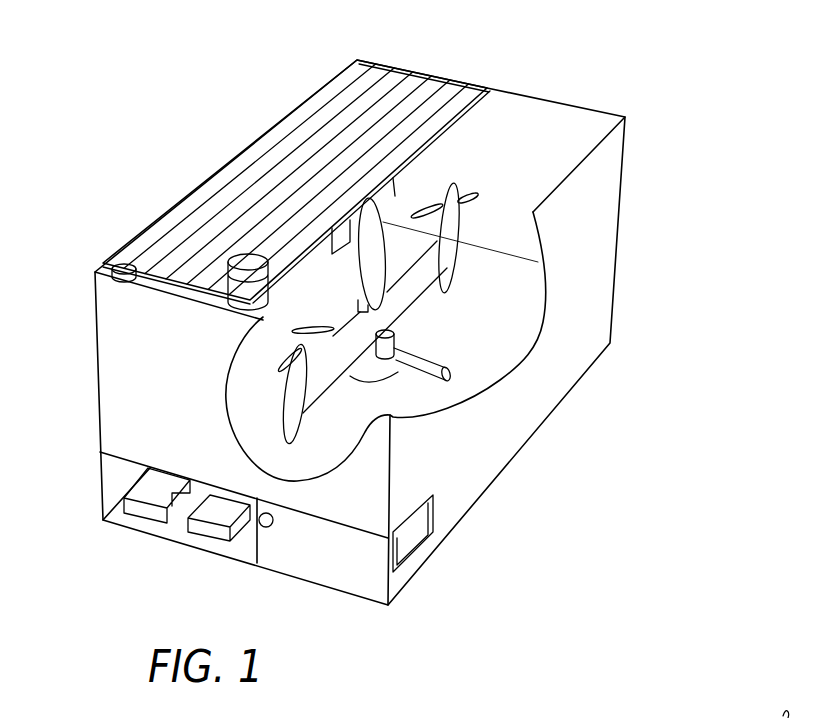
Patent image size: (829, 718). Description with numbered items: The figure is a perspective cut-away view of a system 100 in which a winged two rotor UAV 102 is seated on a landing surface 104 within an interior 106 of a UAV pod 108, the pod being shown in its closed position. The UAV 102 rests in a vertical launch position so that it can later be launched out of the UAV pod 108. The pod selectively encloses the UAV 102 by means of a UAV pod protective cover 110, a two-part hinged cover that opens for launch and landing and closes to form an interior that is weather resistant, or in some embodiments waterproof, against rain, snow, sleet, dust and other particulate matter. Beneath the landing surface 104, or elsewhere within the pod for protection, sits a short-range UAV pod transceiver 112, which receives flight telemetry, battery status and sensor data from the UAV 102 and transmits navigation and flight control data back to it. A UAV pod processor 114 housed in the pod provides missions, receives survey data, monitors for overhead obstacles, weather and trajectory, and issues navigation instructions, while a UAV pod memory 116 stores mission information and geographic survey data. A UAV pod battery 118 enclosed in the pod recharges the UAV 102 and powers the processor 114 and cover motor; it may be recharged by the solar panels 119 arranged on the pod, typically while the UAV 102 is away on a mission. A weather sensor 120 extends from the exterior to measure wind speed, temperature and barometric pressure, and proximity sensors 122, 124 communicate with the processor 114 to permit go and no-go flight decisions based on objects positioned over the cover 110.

The system 100 is at (594, 78).
The UAV 102 is at (470, 233).
The landing surface 104 is at (374, 358).
The interior 106 is at (485, 345).
The UAV pod 108 is at (394, 80).
The UAV pod protective cover 110 is at (368, 183).
The UAV pod transceiver 112 is at (140, 512).
The UAV pod processor 114 is at (203, 554).
The UAV pod memory 116 is at (217, 535).
The UAV pod battery 118 is at (400, 553).
The solar panels 119 is at (217, 198).
The weather sensor 120 is at (242, 288).
The proximity sensor 122 is at (123, 280).
The proximity sensor 124 is at (391, 341).